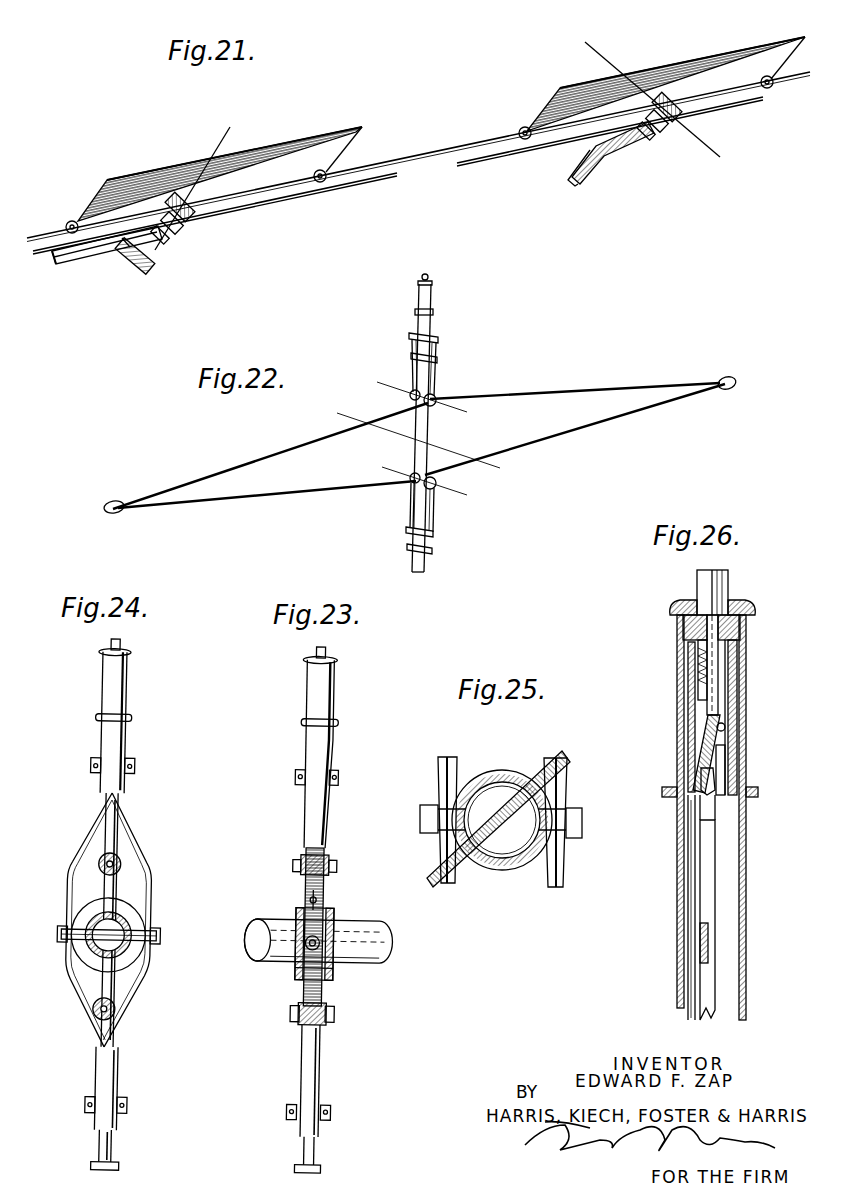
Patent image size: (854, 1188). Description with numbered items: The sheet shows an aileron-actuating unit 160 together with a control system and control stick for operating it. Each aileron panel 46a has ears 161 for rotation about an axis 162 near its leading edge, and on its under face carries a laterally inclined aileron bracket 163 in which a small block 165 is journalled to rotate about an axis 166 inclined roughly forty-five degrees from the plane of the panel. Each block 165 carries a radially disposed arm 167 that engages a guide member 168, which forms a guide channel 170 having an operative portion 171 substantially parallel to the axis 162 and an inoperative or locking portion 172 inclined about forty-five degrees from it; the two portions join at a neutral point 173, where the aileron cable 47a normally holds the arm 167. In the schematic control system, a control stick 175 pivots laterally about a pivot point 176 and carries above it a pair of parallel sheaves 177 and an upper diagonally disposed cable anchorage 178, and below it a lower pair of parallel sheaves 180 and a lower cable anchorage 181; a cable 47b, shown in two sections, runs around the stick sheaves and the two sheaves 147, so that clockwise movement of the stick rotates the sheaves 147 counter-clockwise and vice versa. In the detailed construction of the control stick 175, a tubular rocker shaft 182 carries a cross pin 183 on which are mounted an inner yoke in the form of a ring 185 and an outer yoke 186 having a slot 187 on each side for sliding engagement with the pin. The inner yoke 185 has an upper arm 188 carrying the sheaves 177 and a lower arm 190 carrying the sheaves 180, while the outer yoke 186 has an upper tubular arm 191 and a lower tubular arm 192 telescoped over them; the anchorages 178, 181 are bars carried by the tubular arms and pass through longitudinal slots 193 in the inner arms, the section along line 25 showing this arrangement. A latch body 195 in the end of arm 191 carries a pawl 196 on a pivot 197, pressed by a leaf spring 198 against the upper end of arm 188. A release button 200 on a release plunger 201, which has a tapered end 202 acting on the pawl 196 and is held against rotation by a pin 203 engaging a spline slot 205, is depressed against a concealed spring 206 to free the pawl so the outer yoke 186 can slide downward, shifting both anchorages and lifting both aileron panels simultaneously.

In FIG. 21, the aileron panel 46a is at (305, 148).
In FIG. 21, the aileron cable 47a is at (302, 193).
In FIG. 22, the cable 47b is at (612, 387).
In FIG. 22, the sheave 147 is at (736, 381).
In FIG. 21, the aileron-actuating unit 160 is at (196, 229).
In FIG. 21, the ears 161 is at (70, 220).
In FIG. 21, the axis 162 is at (441, 149).
In FIG. 21, the aileron bracket 163 is at (177, 231).
In FIG. 21, the small block 165 is at (196, 206).
In FIG. 21, the axis 166 is at (222, 131).
In FIG. 21, the arm 167 is at (150, 241).
In FIG. 21, the guide member 168 is at (143, 276).
In FIG. 21, the guide channel 170 is at (82, 265).
In FIG. 21, the operative portion 171 is at (50, 263).
In FIG. 21, the inoperative or locking portion 172 is at (126, 272).
In FIG. 21, the neutral point 173 is at (120, 250).
In FIG. 22, the control stick 175 is at (419, 295).
In FIG. 24, the control stick 175 is at (136, 732).
In FIG. 23, the control stick 175 is at (338, 811).
In FIG. 26, the control stick 175 is at (678, 843).
In FIG. 22, the pivot point 176 is at (420, 445).
In FIG. 22, the parallel sheaves 177 is at (411, 385).
In FIG. 24, the parallel sheaves 177 is at (120, 866).
In FIG. 23, the parallel sheaves 177 is at (298, 866).
In FIG. 25, the parallel sheaves 177 is at (440, 862).
In FIG. 22, the cable anchorage 178 is at (438, 335).
In FIG. 24, the cable anchorage 178 is at (132, 767).
In FIG. 23, the cable anchorage 178 is at (300, 782).
In FIG. 25, the cable anchorage 178 is at (526, 862).
In FIG. 26, the cable anchorage 178 is at (700, 936).
In FIG. 22, the parallel sheaves 180 is at (412, 485).
In FIG. 24, the parallel sheaves 180 is at (96, 1013).
In FIG. 23, the parallel sheaves 180 is at (298, 1018).
In FIG. 22, the cable anchorage 181 is at (434, 550).
In FIG. 24, the cable anchorage 181 is at (88, 1106).
In FIG. 23, the cable anchorage 181 is at (334, 1113).
In FIG. 24, the tubular rocker shaft 182 is at (126, 935).
In FIG. 23, the tubular rocker shaft 182 is at (276, 952).
In FIG. 24, the cross pin 183 is at (96, 928).
In FIG. 23, the cross pin 183 is at (320, 940).
In FIG. 24, the inner yoke 185 is at (82, 958).
In FIG. 23, the inner yoke 185 is at (298, 978).
In FIG. 24, the outer yoke 186 is at (70, 866).
In FIG. 23, the outer yoke 186 is at (328, 984).
In FIG. 23, the slot 187 is at (305, 902).
In FIG. 24, the upper arm 188 is at (108, 830).
In FIG. 25, the upper arm 188 is at (512, 775).
In FIG. 26, the upper arm 188 is at (746, 862).
In FIG. 24, the lower arm 190 is at (120, 1026).
In FIG. 24, the upper tubular arm 191 is at (108, 734).
In FIG. 23, the upper tubular arm 191 is at (326, 735).
In FIG. 25, the upper tubular arm 191 is at (470, 780).
In FIG. 26, the upper tubular arm 191 is at (745, 938).
In FIG. 24, the lower tubular arm 192 is at (110, 1082).
In FIG. 23, the lower tubular arm 192 is at (308, 1080).
In FIG. 24, the longitudinal slots 193 is at (112, 1150).
In FIG. 23, the longitudinal slots 193 is at (306, 1147).
In FIG. 25, the longitudinal slots 193 is at (456, 878).
In FIG. 26, the longitudinal slots 193 is at (696, 984).
In FIG. 26, the latch body 195 is at (736, 694).
In FIG. 26, the pawl 196 is at (702, 772).
In FIG. 26, the pivot 197 is at (726, 729).
In FIG. 26, the leaf spring 198 is at (728, 776).
In FIG. 24, the release button 200 is at (100, 647).
In FIG. 23, the release button 200 is at (306, 652).
In FIG. 26, the release button 200 is at (730, 582).
In FIG. 26, the release plunger 201 is at (746, 633).
In FIG. 26, the tapered end 202 is at (706, 738).
In FIG. 26, the pin 203 is at (695, 700).
In FIG. 26, the spline slot 205 is at (686, 651).
In FIG. 26, the concealed spring 206 is at (682, 626).
In FIG. 23, the section line 25 is at (296, 750).